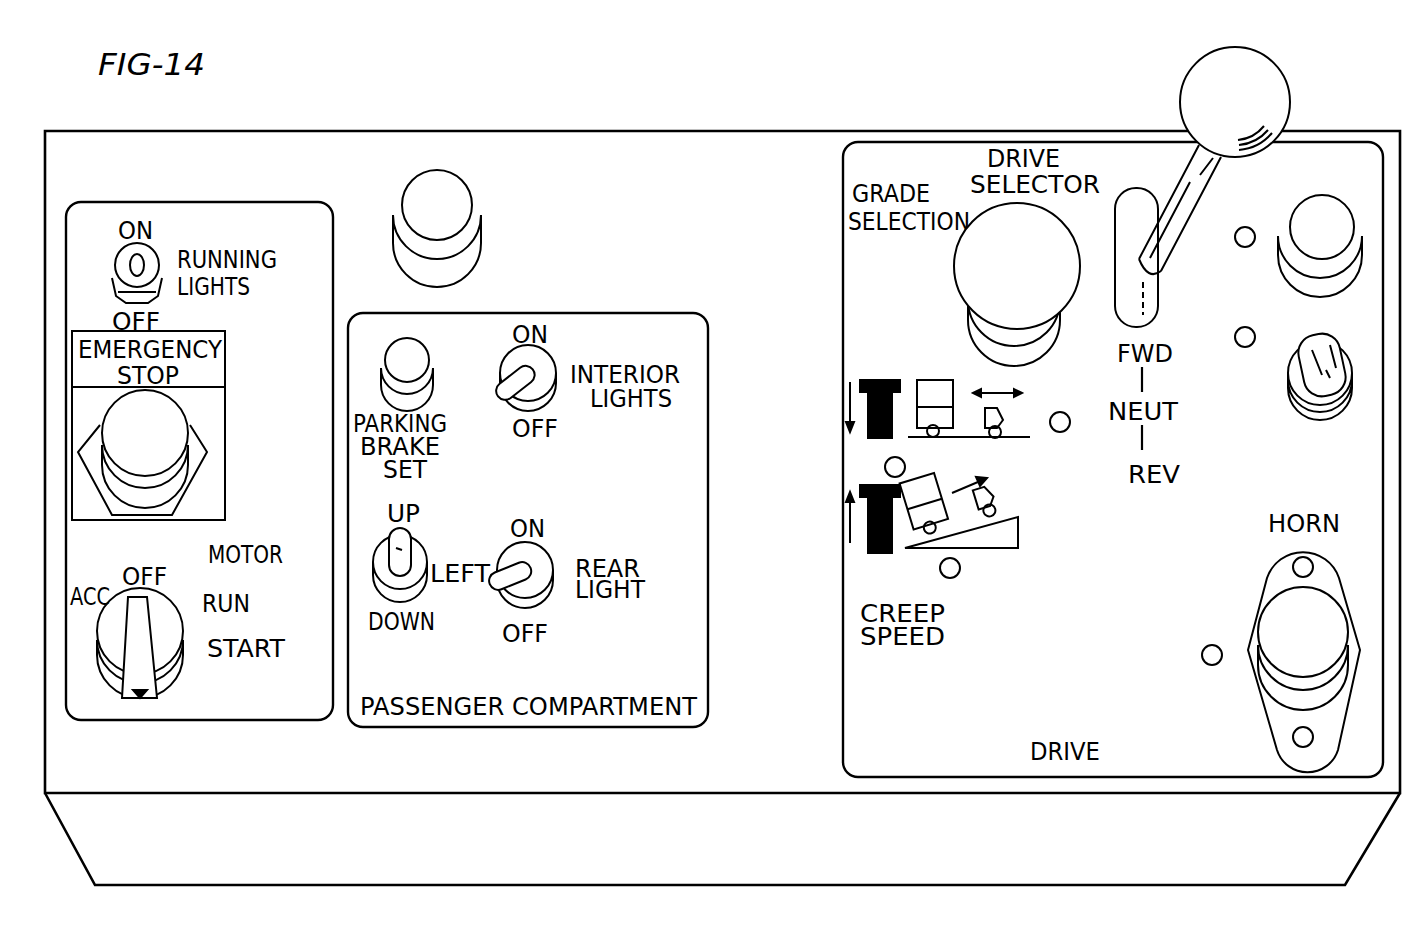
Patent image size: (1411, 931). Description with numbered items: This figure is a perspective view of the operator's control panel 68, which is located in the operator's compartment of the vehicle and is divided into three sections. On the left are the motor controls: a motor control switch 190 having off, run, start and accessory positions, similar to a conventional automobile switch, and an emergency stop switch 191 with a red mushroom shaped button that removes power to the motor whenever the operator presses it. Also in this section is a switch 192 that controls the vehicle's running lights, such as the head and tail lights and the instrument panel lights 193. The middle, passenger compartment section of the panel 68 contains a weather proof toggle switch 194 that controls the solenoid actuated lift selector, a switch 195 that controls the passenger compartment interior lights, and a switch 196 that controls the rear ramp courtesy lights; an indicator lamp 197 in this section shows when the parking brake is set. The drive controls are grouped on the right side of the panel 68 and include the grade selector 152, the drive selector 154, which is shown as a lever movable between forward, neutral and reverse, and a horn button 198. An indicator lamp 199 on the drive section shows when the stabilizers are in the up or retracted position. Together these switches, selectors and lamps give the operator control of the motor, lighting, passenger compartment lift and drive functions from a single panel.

The operator's control panel 68 is at (652, 160).
The grade selector 152 is at (973, 260).
The drive selector 154 is at (1177, 187).
The motor control switch 190 is at (155, 628).
The emergency stop switch 191 is at (178, 438).
The running lights switch 192 is at (155, 248).
The instrument panel lights 193 is at (398, 193).
The weather proof toggle switch 194 is at (412, 578).
The interior lights switch 195 is at (533, 562).
The rear ramp courtesy lights switch 196 is at (528, 375).
The parking brake indicator lamp 197 is at (417, 363).
The horn button 198 is at (1258, 640).
The stabilizer indicator lamp 199 is at (1305, 383).